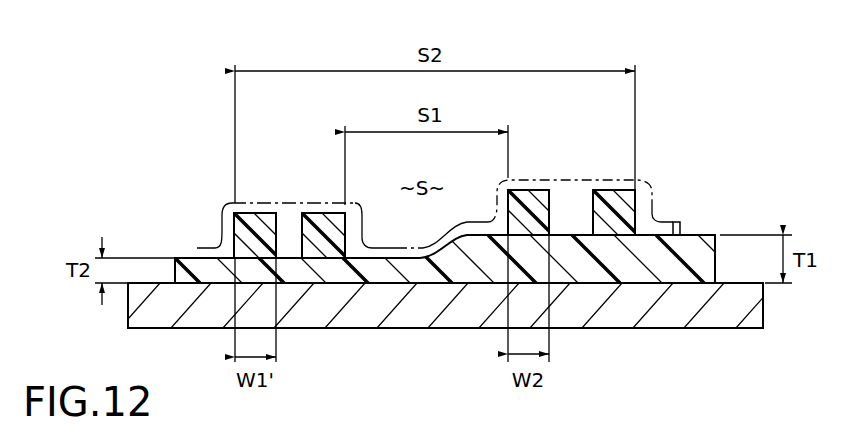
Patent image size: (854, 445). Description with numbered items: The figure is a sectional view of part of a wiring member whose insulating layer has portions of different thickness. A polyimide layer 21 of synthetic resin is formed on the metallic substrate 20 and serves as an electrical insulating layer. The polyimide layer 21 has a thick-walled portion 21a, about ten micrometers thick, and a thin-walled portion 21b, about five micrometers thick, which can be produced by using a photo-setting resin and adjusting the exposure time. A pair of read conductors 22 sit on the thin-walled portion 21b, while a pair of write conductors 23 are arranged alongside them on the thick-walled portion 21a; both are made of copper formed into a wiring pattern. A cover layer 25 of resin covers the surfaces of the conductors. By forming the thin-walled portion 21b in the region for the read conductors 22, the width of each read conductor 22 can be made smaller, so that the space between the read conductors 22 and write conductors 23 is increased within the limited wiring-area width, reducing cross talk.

The metallic substrate 20 is at (405, 320).
The polyimide layer 21 is at (449, 216).
The thick-walled portion 21a is at (568, 240).
The thin-walled portion 21b is at (287, 265).
The read conductors 22 is at (256, 226).
The write conductors 23 is at (530, 198).
The cover layer 25 is at (647, 182).